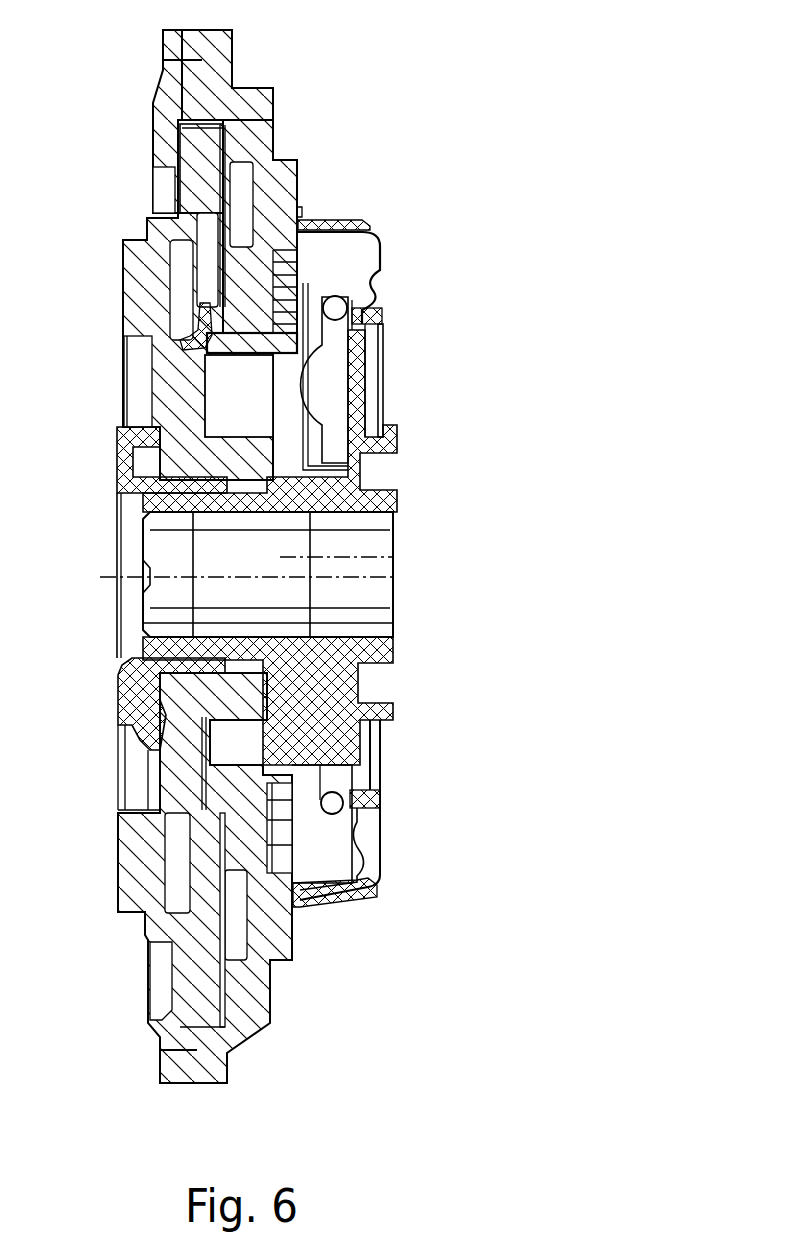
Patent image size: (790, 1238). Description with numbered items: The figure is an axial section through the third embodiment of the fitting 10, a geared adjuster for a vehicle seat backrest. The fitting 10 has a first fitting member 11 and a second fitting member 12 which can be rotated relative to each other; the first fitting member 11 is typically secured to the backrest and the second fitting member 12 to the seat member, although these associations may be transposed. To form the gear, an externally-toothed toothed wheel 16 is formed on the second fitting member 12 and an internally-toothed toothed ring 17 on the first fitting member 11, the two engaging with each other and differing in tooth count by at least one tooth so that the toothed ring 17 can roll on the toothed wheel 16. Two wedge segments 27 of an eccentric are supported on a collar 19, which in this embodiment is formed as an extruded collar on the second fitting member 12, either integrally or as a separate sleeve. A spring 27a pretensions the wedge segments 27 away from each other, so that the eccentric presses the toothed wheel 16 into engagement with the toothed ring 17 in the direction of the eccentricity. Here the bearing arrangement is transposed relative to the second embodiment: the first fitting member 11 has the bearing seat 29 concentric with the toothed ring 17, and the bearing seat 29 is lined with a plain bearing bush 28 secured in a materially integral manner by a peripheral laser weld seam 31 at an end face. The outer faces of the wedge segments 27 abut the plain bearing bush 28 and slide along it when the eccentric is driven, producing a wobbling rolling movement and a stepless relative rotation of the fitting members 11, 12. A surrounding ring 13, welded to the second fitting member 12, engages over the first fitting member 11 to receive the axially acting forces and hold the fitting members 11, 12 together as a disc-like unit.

The fitting 10 is at (422, 203).
The first fitting member 11 is at (297, 182).
The second fitting member 12 is at (125, 250).
The surrounding ring 13 is at (157, 110).
The toothed wheel 16 is at (200, 135).
The toothed ring 17 is at (207, 110).
The collar 19 is at (390, 509).
The wedge segments 27 is at (237, 392).
The spring 27a is at (337, 338).
The plain bearing bush 28 is at (273, 343).
The bearing seat 29 is at (340, 300).
The laser weld seam 31 is at (265, 782).